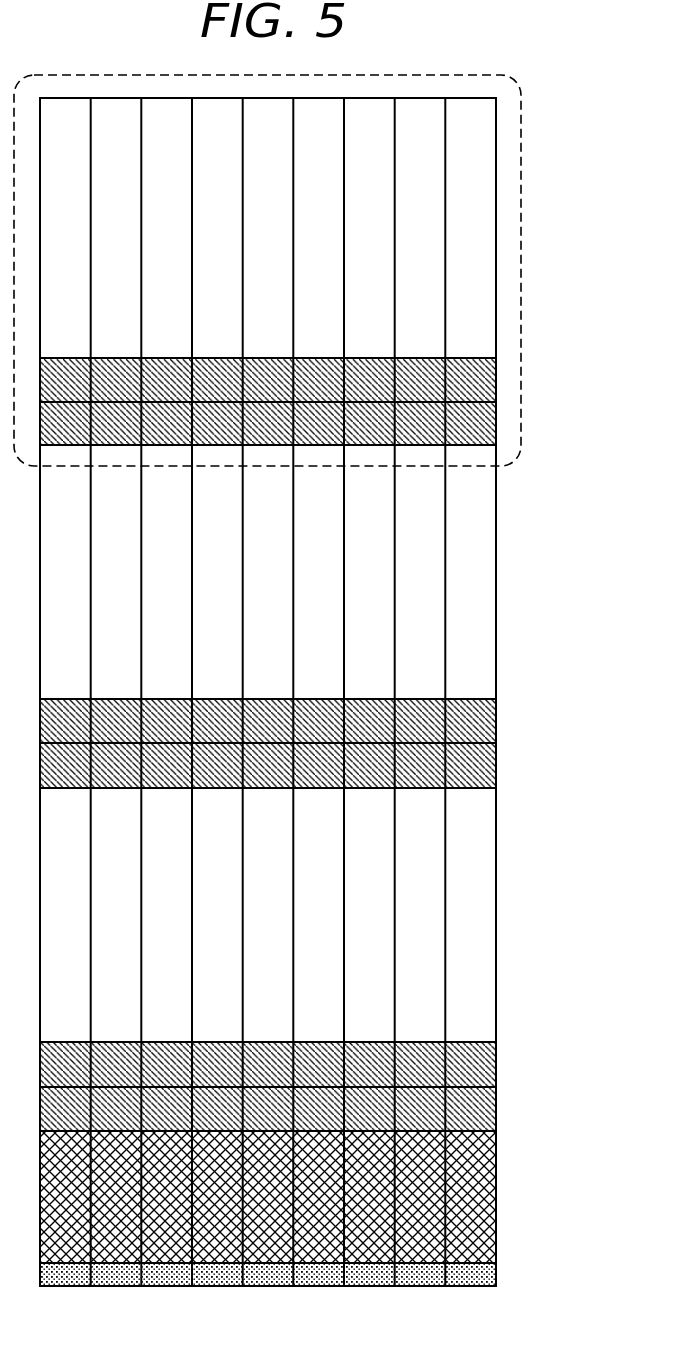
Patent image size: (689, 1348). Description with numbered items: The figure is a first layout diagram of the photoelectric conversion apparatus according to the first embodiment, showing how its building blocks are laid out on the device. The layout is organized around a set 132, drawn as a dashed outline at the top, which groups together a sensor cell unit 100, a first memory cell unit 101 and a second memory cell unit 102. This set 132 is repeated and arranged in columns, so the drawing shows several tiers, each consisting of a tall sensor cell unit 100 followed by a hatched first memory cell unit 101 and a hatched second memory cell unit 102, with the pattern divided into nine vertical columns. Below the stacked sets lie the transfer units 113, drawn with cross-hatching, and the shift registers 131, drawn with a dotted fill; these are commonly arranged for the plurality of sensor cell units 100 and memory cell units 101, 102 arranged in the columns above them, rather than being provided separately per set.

The sensor cell unit 100 is at (496, 245).
The first memory cell unit 101 is at (488, 381).
The second memory cell unit 102 is at (488, 426).
The transfer unit 113 is at (488, 1171).
The shift register 131 is at (488, 1274).
The set 132 is at (521, 150).